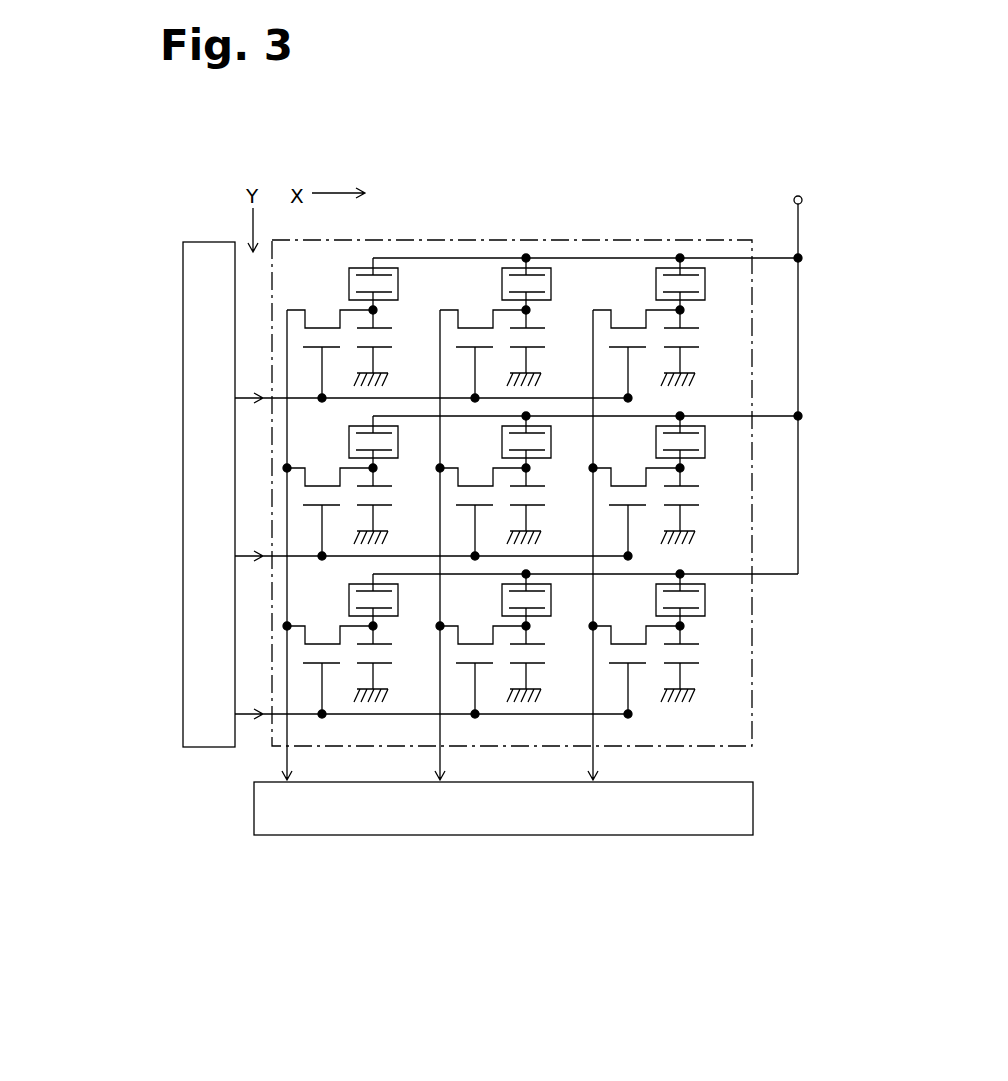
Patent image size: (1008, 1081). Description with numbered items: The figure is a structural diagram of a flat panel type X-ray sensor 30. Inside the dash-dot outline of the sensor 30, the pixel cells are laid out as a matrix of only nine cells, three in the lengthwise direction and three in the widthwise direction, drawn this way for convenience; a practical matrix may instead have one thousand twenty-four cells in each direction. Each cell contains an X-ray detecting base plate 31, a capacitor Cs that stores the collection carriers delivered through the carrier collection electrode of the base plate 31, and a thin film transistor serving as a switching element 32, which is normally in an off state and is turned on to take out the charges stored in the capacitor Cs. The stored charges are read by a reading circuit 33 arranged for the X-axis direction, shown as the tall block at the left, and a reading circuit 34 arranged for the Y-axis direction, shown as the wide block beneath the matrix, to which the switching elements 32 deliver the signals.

The flat panel type X-ray sensor 30 is at (495, 231).
The X-ray detecting base plate 31 is at (708, 283).
The switching element 32 is at (473, 323).
The reading circuit 33 is at (179, 447).
The reading circuit 34 is at (503, 835).
The capacitor Cs is at (698, 328).